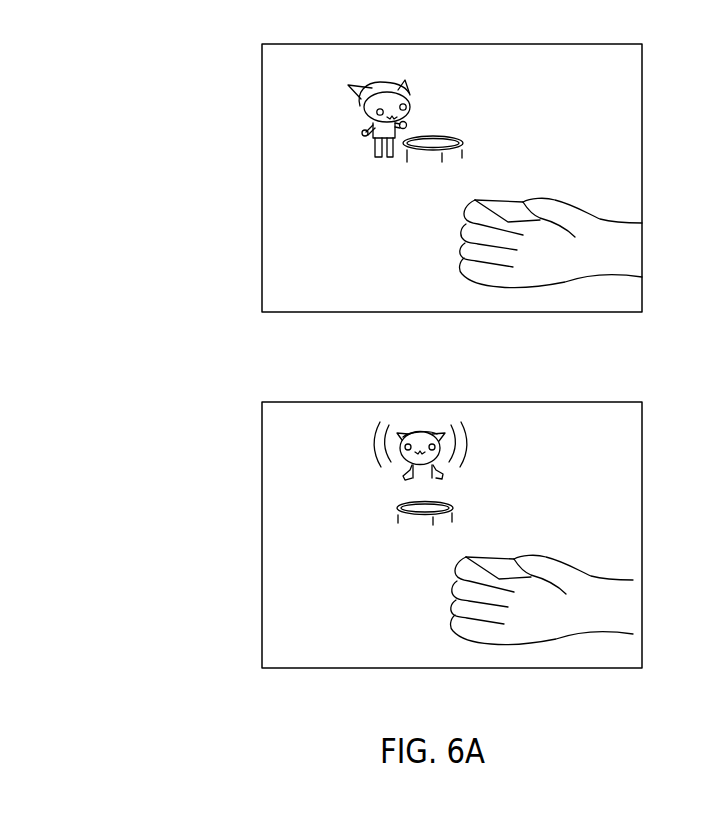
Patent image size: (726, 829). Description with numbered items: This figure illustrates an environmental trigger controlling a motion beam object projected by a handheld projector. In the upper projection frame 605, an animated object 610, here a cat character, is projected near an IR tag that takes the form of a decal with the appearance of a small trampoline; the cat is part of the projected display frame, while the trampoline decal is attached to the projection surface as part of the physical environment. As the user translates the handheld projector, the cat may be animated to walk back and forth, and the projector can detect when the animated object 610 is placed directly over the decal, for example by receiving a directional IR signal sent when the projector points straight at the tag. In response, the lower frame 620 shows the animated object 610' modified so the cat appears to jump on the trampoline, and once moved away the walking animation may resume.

The projection frame 605 is at (262, 181).
The animated object 610 is at (351, 110).
The animated object 610' is at (393, 460).
The frame 620 is at (262, 536).